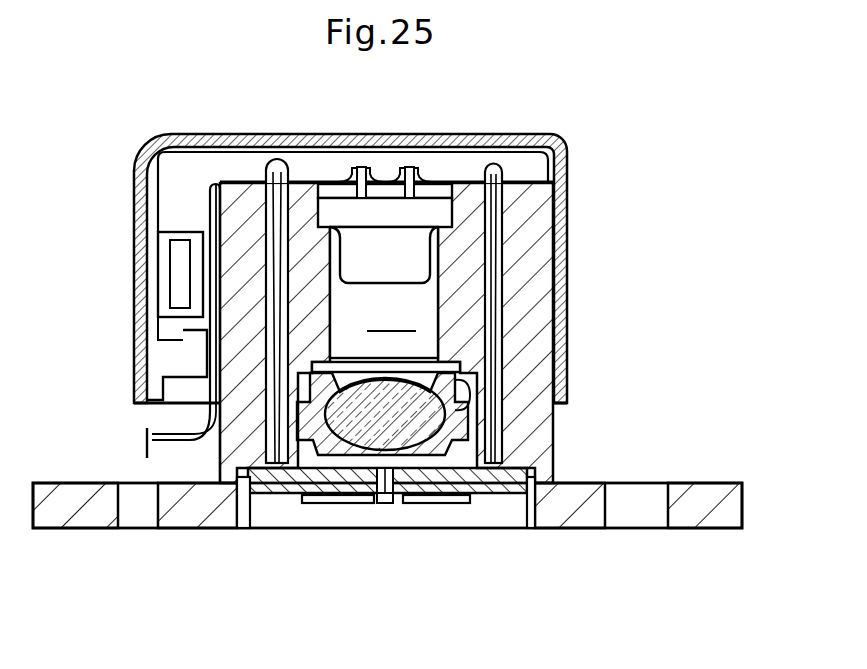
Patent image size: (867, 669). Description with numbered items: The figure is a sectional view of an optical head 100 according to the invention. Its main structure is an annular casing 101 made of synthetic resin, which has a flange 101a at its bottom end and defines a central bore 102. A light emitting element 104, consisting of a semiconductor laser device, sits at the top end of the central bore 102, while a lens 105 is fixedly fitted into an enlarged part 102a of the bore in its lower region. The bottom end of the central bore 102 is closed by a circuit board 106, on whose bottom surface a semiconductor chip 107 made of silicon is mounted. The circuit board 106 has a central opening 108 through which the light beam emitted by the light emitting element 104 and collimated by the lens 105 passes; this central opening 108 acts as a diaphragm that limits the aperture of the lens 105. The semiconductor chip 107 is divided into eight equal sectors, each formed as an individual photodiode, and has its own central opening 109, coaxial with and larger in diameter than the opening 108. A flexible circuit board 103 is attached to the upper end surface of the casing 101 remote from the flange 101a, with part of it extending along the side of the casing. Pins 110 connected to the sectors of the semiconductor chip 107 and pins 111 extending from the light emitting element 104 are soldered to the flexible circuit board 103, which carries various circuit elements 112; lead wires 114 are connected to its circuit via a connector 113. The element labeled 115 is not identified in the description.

The optical head 100 is at (588, 162).
The annular casing 101 is at (542, 443).
The flange 101a is at (707, 496).
The central bore 102 is at (386, 285).
The enlarged part 102a is at (458, 418).
The flexible circuit board 103 is at (330, 183).
The light emitting element 104 is at (413, 243).
The lens 105 is at (357, 447).
The circuit board 106 is at (507, 493).
The semiconductor chip 107 is at (450, 502).
The central opening 108 is at (382, 504).
The central opening 109 is at (380, 493).
The pins 110 is at (277, 165).
The pins 111 is at (362, 168).
The circuit elements 112 is at (187, 289).
The connector 113 is at (187, 350).
The lead wires 114 is at (147, 445).
The cover liner 115 is at (568, 265).